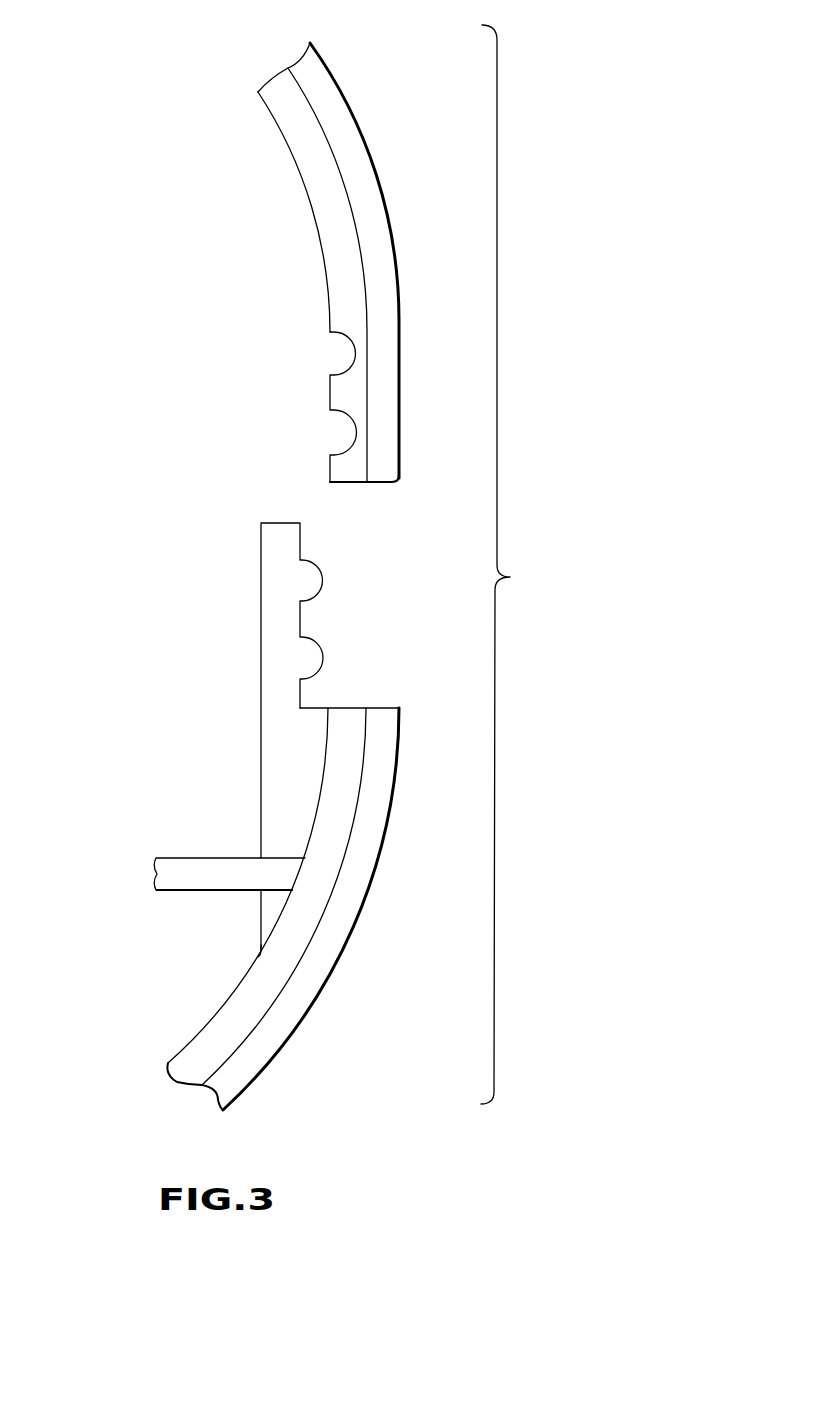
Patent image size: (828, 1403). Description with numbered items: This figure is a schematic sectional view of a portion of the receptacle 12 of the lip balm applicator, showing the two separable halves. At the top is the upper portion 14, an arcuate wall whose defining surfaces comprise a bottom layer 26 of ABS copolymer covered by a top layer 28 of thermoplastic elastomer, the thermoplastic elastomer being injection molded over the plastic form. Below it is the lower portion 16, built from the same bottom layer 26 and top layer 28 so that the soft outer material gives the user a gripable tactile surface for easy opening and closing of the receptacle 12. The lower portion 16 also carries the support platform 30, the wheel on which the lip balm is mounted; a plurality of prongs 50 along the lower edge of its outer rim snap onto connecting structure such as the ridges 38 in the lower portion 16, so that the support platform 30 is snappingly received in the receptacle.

The receptacle 12 is at (530, 558).
The upper portion 14 is at (366, 126).
The lower portion 16 is at (297, 1047).
The bottom layer 26 is at (307, 177).
The top layer 28 is at (400, 305).
The support platform 30 is at (261, 577).
The ridges 38 is at (202, 852).
The prongs 50 is at (258, 955).